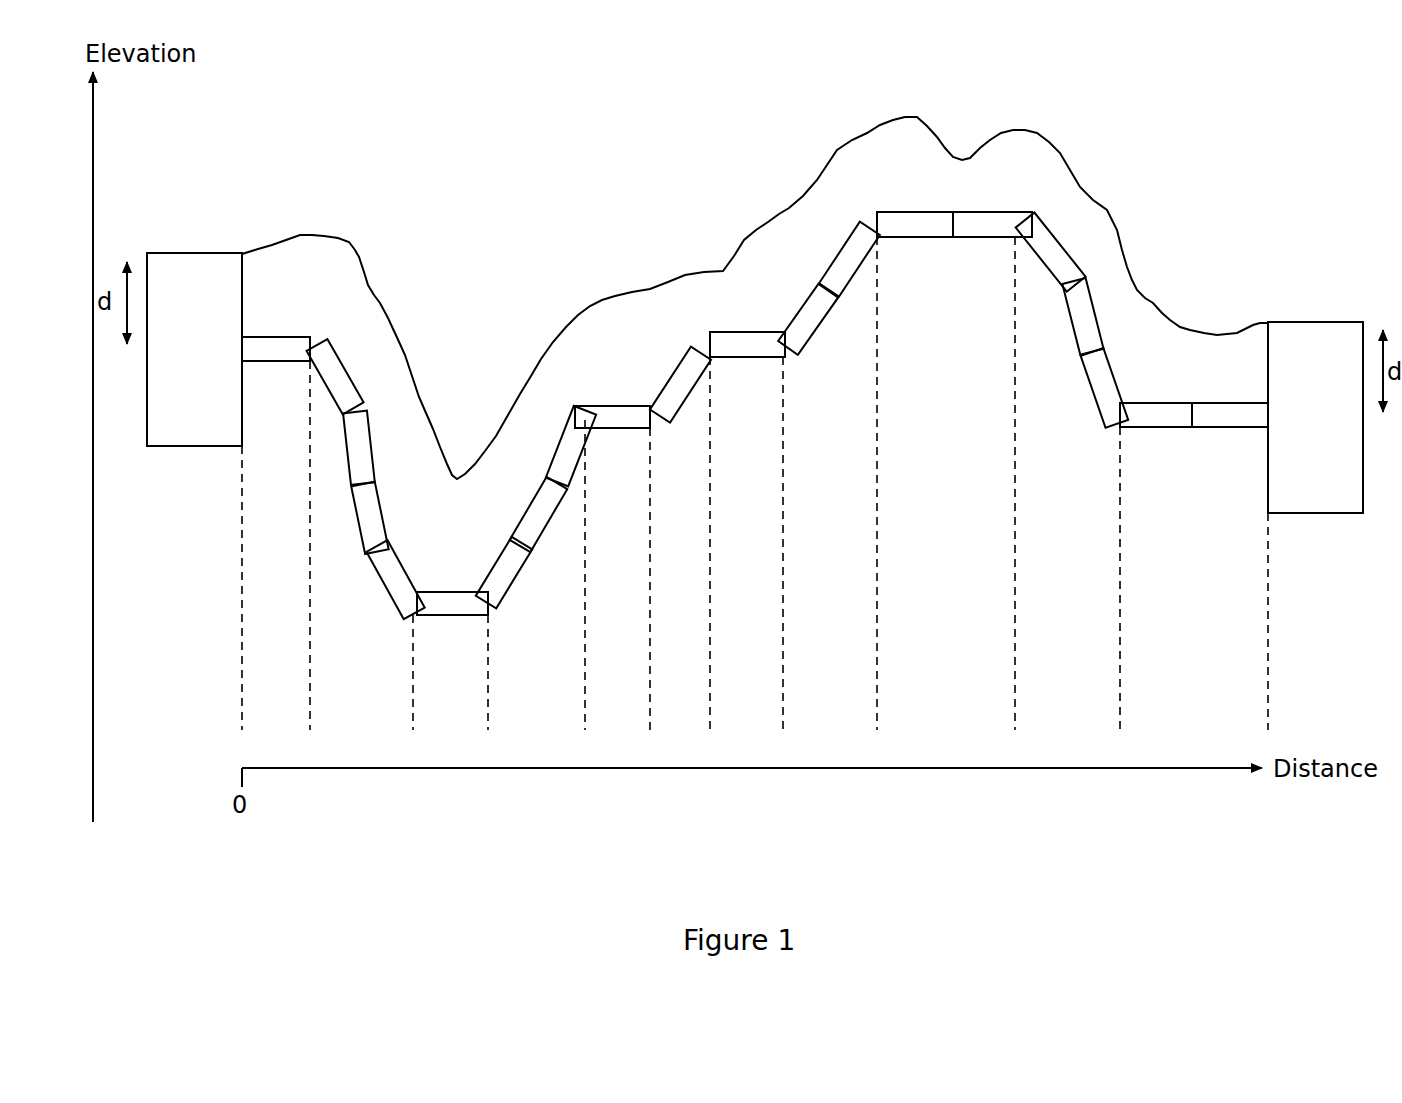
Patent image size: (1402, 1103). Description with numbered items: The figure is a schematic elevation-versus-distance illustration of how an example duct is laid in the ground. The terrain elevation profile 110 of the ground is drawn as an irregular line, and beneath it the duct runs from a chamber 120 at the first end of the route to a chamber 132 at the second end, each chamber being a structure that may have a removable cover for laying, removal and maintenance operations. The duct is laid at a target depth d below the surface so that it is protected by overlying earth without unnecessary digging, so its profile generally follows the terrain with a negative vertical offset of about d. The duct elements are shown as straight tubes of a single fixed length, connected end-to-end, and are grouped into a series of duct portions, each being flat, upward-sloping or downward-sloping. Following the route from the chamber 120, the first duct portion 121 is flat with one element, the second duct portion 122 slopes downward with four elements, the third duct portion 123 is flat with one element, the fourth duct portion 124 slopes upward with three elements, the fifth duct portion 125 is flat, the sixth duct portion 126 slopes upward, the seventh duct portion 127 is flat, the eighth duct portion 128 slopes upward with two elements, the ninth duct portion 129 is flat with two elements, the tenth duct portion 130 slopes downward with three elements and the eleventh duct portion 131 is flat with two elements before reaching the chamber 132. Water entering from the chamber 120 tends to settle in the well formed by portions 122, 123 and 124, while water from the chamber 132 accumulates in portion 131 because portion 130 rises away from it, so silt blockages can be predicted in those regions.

The terrain elevation profile 110 is at (1120, 228).
The chamber 120 is at (194, 349).
The first duct portion 121 is at (309, 675).
The second duct portion 122 is at (412, 675).
The third duct portion 123 is at (487, 675).
The fourth duct portion 124 is at (584, 675).
The fifth duct portion 125 is at (649, 675).
The sixth duct portion 126 is at (709, 675).
The seventh duct portion 127 is at (782, 675).
The eighth duct portion 128 is at (876, 675).
The ninth duct portion 129 is at (1014, 675).
The tenth duct portion 130 is at (1119, 675).
The eleventh duct portion 131 is at (1267, 675).
The chamber 132 is at (1315, 417).